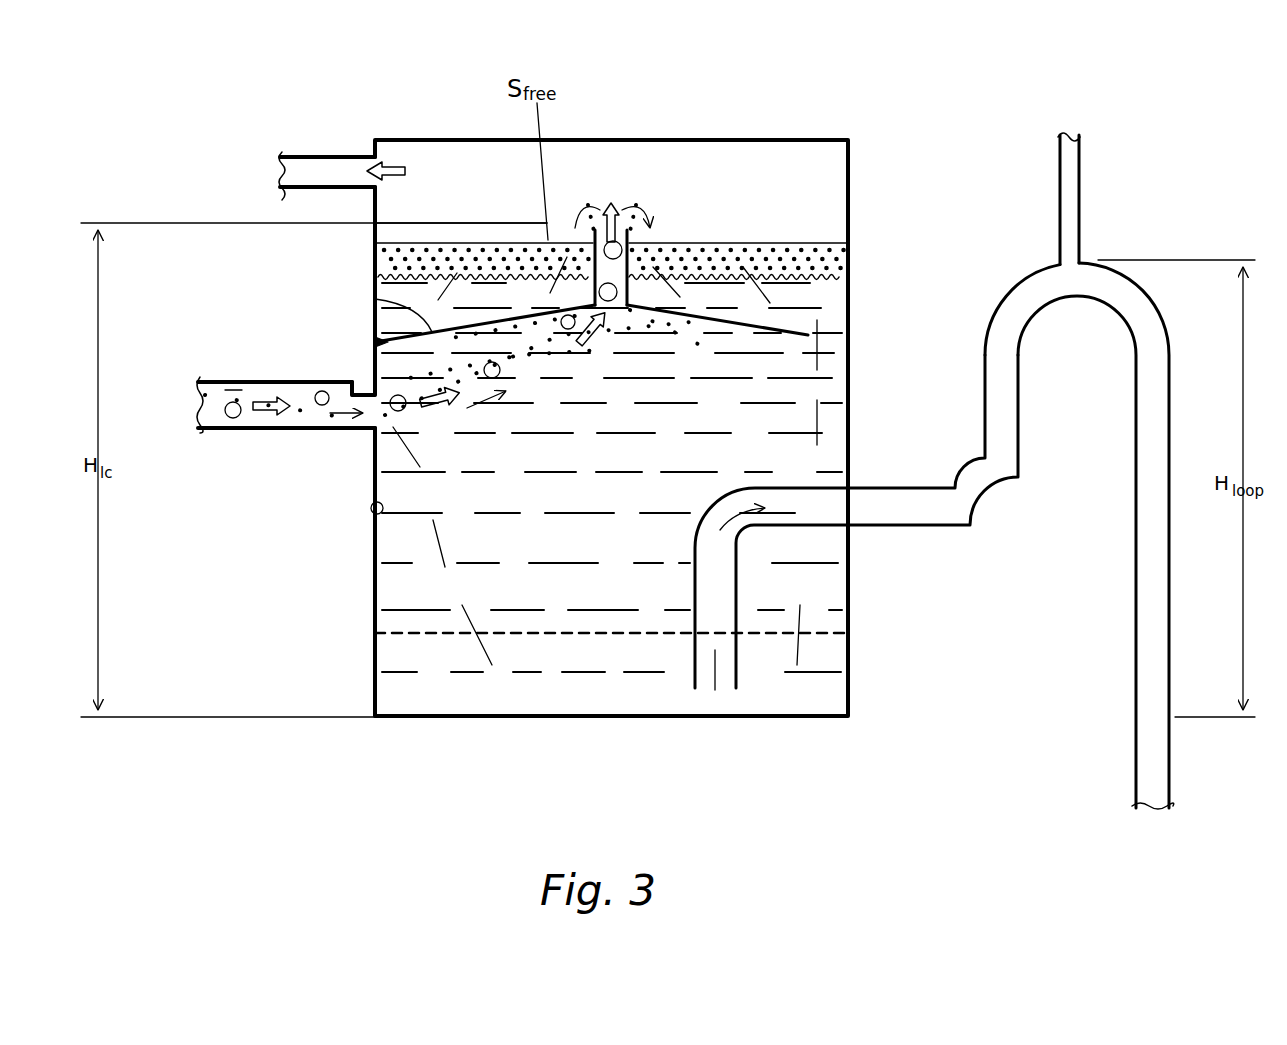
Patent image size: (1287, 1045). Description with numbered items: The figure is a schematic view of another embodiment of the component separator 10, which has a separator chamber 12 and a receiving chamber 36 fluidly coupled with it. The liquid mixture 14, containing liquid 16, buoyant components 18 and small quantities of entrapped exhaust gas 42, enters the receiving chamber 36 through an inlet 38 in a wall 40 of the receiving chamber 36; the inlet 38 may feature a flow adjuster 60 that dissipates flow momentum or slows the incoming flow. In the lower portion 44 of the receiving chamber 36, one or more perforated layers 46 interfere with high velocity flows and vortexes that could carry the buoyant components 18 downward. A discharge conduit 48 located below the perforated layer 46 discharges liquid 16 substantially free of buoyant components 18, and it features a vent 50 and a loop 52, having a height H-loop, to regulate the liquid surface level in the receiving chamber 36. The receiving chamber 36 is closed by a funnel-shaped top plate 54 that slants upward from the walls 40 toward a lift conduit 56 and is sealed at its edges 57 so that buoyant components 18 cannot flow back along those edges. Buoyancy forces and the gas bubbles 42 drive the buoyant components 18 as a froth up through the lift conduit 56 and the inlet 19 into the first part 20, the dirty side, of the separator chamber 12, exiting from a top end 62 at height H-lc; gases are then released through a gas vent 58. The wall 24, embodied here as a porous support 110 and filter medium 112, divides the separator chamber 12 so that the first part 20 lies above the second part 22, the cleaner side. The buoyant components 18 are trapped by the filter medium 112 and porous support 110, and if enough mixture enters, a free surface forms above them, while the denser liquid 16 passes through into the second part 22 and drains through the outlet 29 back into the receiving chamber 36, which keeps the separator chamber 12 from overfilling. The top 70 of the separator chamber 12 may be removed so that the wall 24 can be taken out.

The component separator 10 is at (943, 85).
The separator chamber 12 is at (483, 154).
The liquid mixture 14 is at (608, 210).
The liquid 16 is at (440, 540).
The buoyant components 18 is at (722, 250).
The inlet 19 is at (625, 225).
The first part 20 is at (454, 171).
The second part 22 is at (820, 307).
The wall 24 is at (373, 272).
The outlet 29 is at (828, 330).
The receiving chamber 36 is at (470, 573).
The inlet 38 is at (238, 382).
The wall 40 is at (371, 513).
The entrapped exhaust gas 42 is at (384, 163).
The lower portion 44 is at (410, 680).
The perforated layers 46 is at (405, 633).
The discharge conduit 48 is at (737, 585).
The vent 50 is at (1080, 165).
The loop 52 is at (1045, 262).
The top plate 54 is at (375, 299).
The lift conduit 56 is at (571, 236).
The edges 57 is at (373, 342).
The gas vent 58 is at (343, 158).
The flow adjuster 60 is at (355, 390).
The top end 62 is at (640, 235).
The top 70 is at (718, 140).
The porous support 110 is at (835, 278).
The filter medium 112 is at (835, 243).